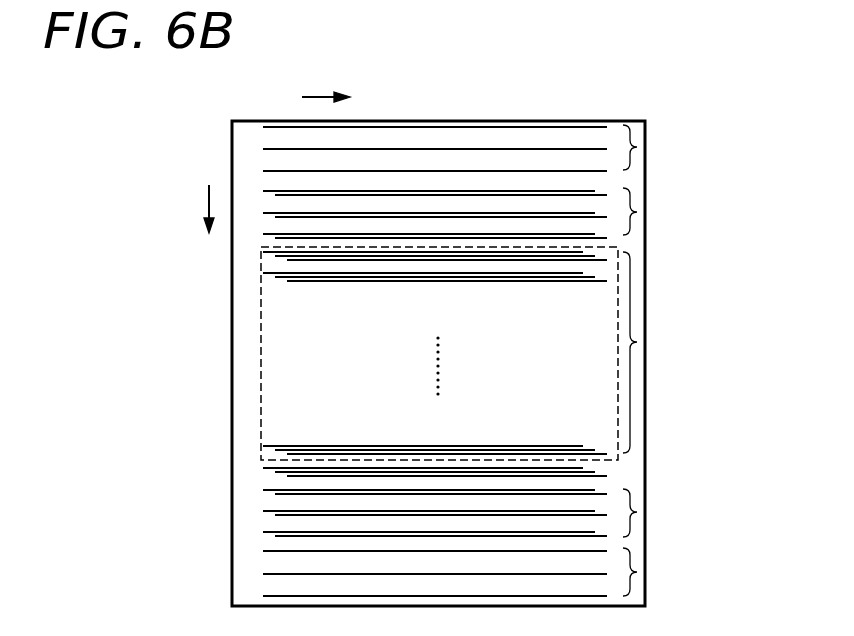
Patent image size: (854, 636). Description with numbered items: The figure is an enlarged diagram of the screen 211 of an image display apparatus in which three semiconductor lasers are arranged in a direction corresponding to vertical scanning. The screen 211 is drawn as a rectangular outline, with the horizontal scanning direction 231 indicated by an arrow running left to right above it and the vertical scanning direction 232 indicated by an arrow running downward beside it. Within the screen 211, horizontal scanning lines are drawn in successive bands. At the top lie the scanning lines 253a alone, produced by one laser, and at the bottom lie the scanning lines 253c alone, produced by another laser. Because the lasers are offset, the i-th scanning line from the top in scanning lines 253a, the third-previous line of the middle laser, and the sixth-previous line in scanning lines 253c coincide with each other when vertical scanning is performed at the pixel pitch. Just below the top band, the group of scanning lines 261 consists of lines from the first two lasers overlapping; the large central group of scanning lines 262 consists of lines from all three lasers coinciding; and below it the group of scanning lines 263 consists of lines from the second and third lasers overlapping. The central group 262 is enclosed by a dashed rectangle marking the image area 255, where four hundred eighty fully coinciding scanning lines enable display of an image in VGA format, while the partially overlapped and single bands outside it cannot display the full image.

The screen 211 is at (567, 118).
The horizontal scanning direction 231 is at (319, 94).
The vertical scanning direction 232 is at (207, 198).
The scanning lines 253a is at (640, 147).
The scanning lines 253c is at (640, 572).
The image area 255 is at (261, 305).
The group of scanning lines 261 is at (640, 212).
The group of scanning lines 262 is at (640, 342).
The group of scanning lines 263 is at (640, 512).